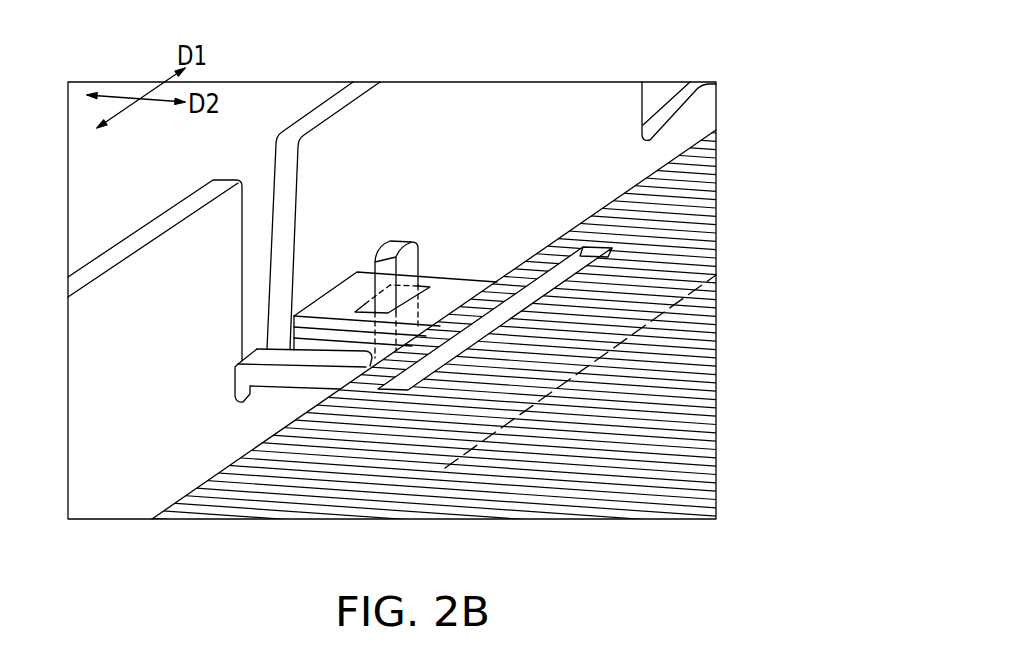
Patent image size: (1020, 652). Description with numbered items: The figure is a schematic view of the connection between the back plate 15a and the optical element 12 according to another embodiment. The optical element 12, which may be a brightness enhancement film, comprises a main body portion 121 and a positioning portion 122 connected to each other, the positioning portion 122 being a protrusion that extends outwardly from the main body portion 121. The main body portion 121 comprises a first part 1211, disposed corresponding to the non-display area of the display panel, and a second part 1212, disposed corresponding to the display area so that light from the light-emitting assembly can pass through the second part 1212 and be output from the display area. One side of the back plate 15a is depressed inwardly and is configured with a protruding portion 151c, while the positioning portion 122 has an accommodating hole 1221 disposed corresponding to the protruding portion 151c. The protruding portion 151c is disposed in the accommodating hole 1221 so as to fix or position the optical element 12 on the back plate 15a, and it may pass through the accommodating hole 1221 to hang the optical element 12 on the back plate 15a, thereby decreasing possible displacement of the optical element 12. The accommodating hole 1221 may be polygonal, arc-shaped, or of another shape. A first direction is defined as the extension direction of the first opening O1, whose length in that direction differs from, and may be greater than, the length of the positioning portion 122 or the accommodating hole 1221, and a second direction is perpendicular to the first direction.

The optical element 12 is at (645, 206).
The main body portion 121 is at (797, 212).
The first part 1211 is at (662, 252).
The second part 1212 is at (680, 347).
The positioning portion 122 is at (346, 292).
The accommodating hole 1221 is at (424, 282).
The protruding portion 151c is at (397, 250).
The back plate 15a is at (133, 276).
The first opening O1 is at (566, 262).